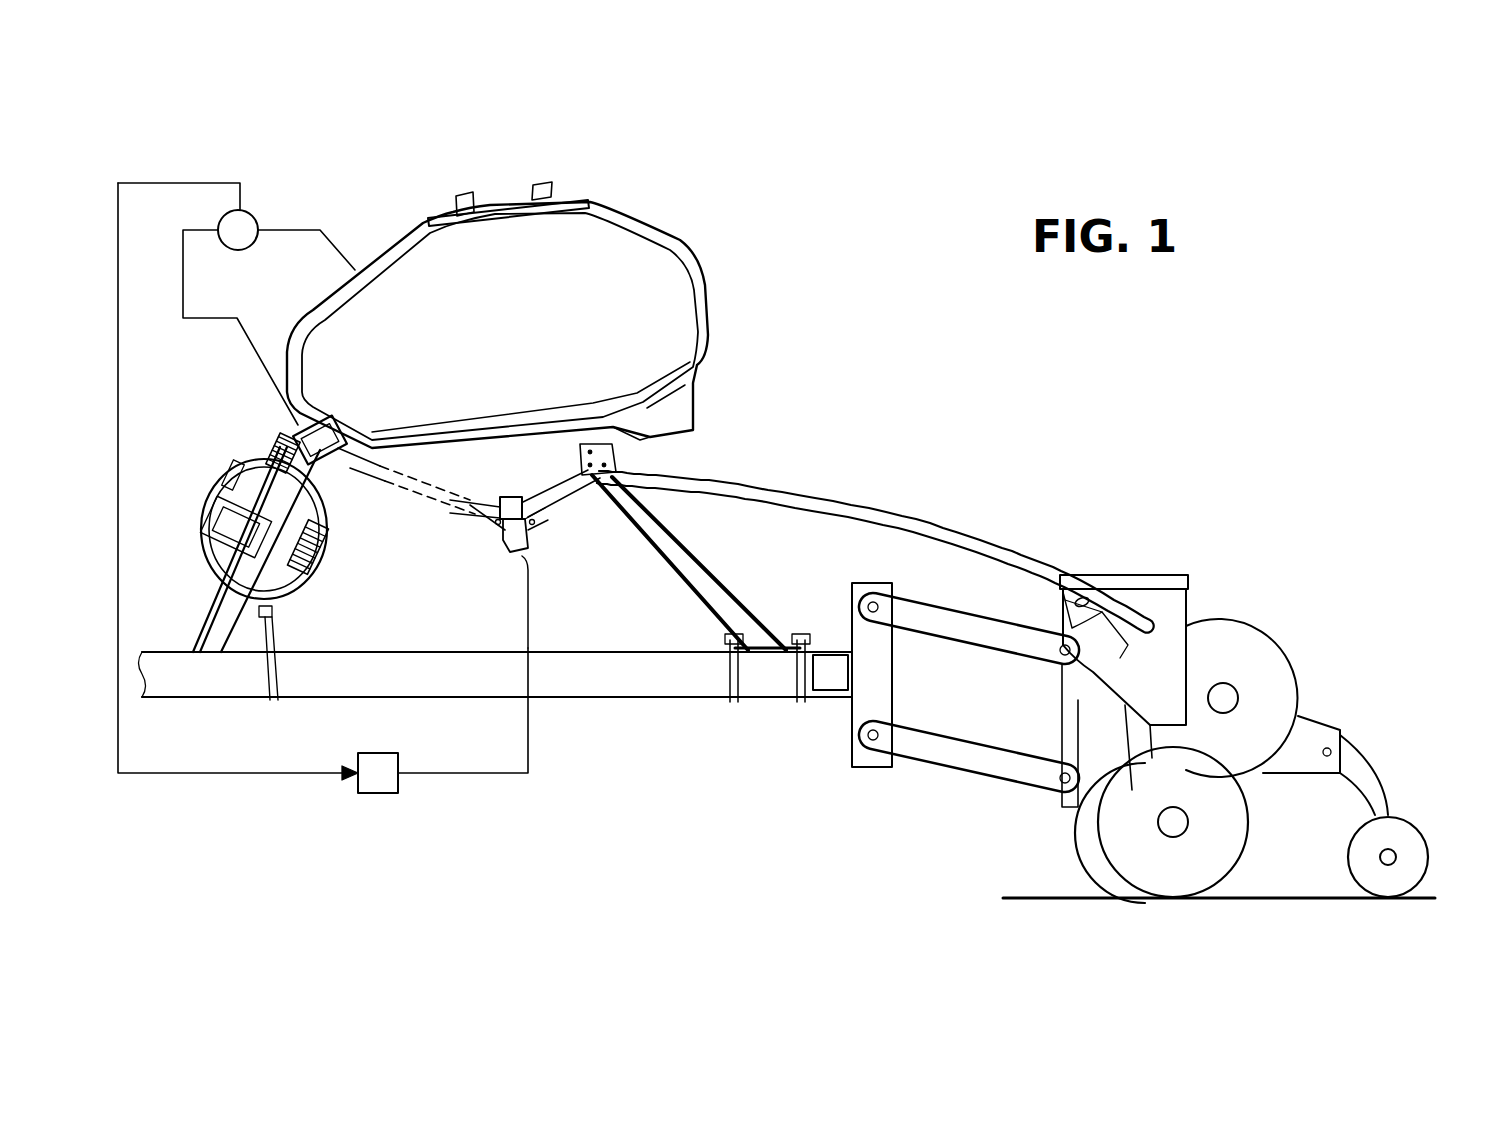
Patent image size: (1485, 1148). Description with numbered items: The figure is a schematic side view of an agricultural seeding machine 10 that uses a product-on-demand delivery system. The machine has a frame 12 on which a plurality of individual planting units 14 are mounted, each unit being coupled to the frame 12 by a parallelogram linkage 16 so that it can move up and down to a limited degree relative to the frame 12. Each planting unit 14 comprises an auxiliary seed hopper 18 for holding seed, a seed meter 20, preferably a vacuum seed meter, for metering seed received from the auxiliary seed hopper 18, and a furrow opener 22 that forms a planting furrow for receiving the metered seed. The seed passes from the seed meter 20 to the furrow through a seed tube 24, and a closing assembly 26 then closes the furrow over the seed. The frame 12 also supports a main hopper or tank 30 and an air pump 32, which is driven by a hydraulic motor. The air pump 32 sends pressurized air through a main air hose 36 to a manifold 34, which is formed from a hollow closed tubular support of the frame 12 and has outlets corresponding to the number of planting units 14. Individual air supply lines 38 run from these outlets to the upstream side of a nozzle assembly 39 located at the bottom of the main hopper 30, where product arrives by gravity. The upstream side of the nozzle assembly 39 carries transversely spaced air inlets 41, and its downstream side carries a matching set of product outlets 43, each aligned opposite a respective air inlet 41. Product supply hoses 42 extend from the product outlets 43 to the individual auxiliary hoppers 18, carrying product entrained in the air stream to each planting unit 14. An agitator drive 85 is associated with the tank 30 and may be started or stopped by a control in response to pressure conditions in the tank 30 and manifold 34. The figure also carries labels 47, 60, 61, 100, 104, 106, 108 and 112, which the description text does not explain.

The agricultural seeding machine 10 is at (853, 316).
The frame 12 is at (505, 698).
The individual planting units 14 is at (1218, 551).
The parallelogram linkage 16 is at (939, 781).
The auxiliary seed hopper 18 is at (1170, 700).
The seed meter 20 is at (1269, 675).
The furrow opener 22 is at (1091, 885).
The seed tube 24 is at (1127, 735).
The closing assembly 26 is at (1393, 820).
The main hopper or tank 30 is at (512, 343).
The air pump 32 is at (208, 563).
The manifold 34 is at (300, 430).
The main air hose 36 is at (283, 457).
The individual air supply lines 38 is at (333, 472).
The nozzle assembly 39 is at (497, 561).
The air inlets 41 is at (495, 525).
The product supply hoses 42 is at (767, 502).
The product outlets 43 is at (540, 520).
The tank lid 47 is at (510, 198).
The hopper inlet 60 is at (1150, 612).
The inlet flap 61 is at (1073, 605).
The agitator drive 85 is at (510, 495).
The controller 100 is at (388, 795).
The level sensor 104 is at (251, 212).
The sensor line 106 is at (302, 228).
The sensor line 108 is at (185, 279).
The control line 112 is at (295, 778).